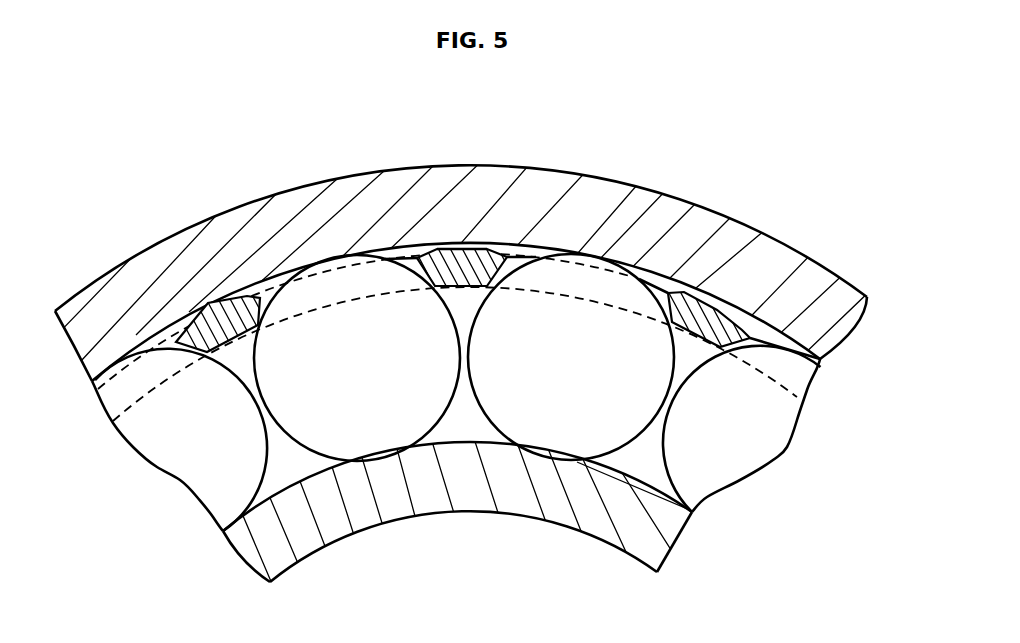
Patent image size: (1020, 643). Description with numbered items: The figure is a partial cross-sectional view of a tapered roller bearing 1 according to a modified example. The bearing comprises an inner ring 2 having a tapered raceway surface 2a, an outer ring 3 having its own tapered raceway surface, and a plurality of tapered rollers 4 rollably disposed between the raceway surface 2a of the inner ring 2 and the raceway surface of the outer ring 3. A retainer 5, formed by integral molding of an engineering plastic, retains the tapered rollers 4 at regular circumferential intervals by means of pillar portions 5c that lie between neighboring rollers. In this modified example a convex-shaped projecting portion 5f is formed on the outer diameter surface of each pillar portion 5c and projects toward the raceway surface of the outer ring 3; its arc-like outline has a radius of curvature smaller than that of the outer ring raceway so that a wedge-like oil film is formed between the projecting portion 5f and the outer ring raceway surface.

The tapered roller bearing 1 is at (677, 168).
The inner ring 2 is at (668, 530).
The raceway surface 2a is at (632, 515).
The outer ring 3 is at (840, 334).
The tapered rollers 4 is at (558, 277).
The retainer 5 is at (461, 272).
The pillar portions 5c is at (480, 257).
The projecting portion 5f is at (452, 243).